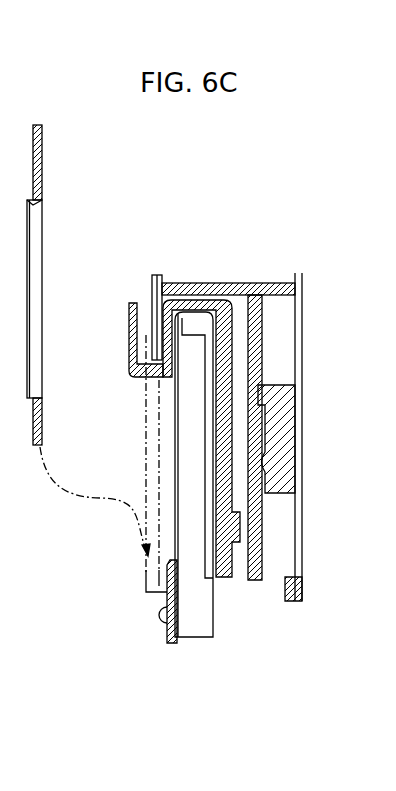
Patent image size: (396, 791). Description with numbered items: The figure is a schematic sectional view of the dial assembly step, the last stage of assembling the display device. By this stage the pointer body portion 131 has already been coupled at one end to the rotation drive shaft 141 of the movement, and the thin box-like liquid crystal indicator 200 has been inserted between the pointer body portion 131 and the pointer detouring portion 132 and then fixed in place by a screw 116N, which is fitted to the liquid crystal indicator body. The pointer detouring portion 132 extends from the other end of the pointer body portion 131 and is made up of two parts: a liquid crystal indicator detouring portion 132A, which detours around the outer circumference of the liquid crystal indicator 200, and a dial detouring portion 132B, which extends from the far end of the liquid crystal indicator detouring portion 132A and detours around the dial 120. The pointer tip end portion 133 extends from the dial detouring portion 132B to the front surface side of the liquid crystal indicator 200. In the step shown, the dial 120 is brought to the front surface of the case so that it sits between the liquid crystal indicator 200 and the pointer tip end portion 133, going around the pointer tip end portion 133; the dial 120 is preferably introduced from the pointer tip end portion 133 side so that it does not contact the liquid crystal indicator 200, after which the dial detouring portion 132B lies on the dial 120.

The dial 120 is at (146, 411).
The pointer detouring portion 132 is at (203, 272).
The liquid crystal indicator detouring portion 132A is at (207, 296).
The dial detouring portion 132B is at (156, 318).
The pointer tip end portion 133 is at (128, 346).
The pointer body portion 131 is at (225, 368).
The rotation drive shaft 141 is at (262, 466).
The liquid crystal indicator 200 is at (192, 640).
The screw 116N is at (160, 622).